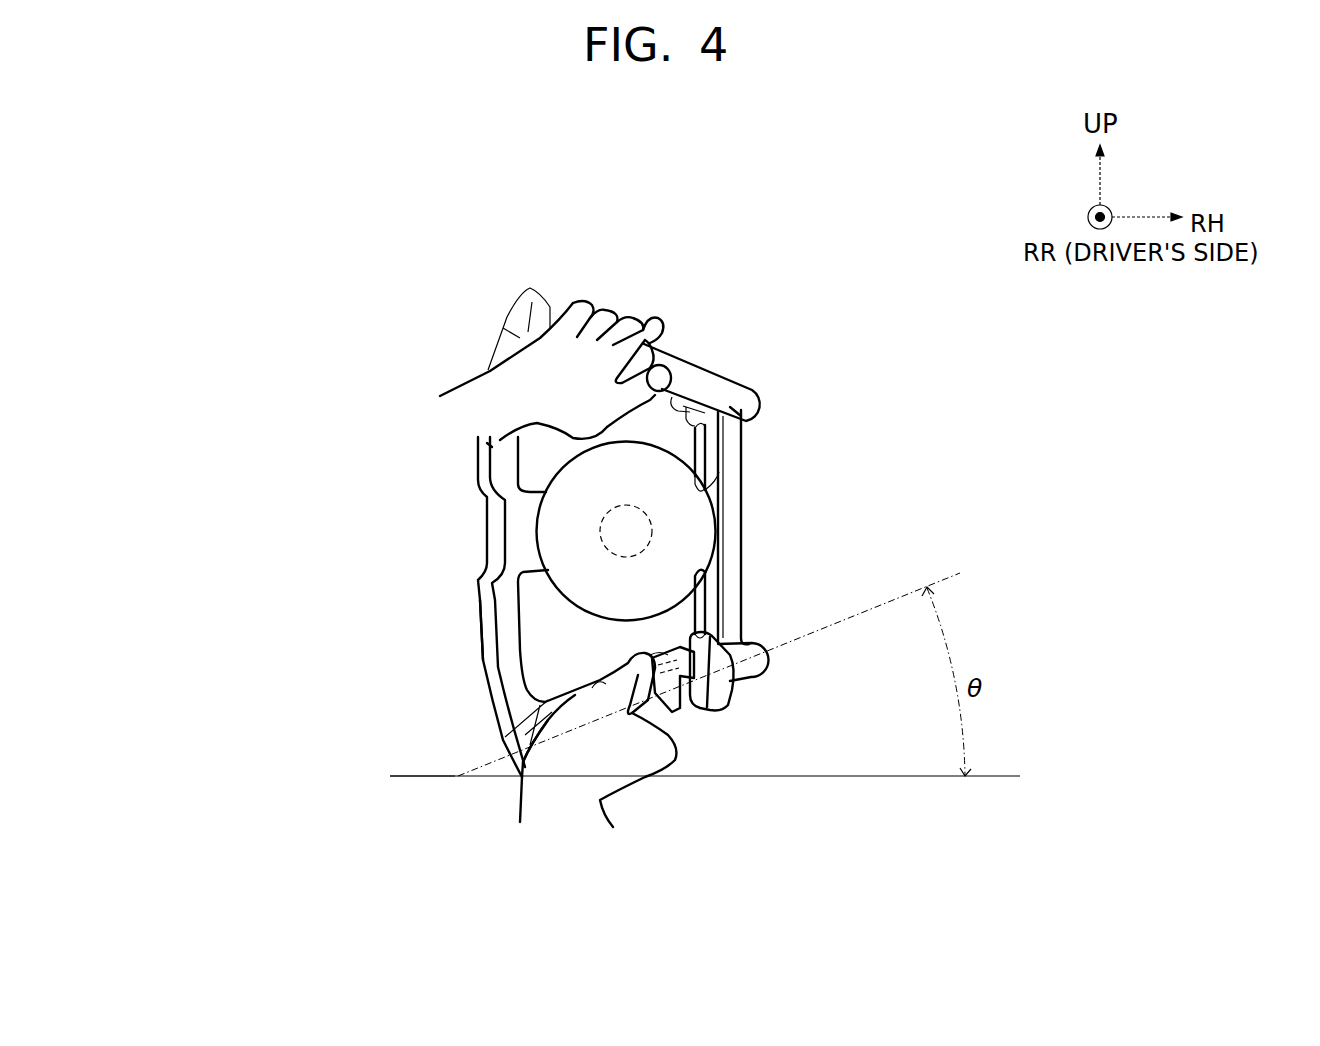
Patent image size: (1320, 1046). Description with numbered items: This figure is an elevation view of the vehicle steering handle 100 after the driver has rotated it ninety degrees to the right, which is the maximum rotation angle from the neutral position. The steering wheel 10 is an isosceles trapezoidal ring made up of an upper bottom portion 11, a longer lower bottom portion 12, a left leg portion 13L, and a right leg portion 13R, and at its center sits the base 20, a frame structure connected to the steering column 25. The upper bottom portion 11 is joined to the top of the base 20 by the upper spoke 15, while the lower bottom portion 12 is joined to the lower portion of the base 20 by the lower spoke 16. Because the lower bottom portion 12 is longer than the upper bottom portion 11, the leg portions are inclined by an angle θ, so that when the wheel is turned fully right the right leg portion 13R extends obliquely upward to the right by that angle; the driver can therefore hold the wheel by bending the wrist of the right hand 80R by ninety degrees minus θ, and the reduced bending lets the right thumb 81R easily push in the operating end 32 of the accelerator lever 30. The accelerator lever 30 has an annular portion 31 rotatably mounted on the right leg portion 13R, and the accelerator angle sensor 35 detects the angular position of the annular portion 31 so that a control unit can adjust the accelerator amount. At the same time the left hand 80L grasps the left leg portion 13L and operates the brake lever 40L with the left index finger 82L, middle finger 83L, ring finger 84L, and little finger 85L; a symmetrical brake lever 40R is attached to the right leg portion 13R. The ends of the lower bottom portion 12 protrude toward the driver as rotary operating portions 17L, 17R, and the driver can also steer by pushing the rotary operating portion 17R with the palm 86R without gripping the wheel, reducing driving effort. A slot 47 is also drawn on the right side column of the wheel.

The vehicle steering handle 100 is at (211, 219).
The steering wheel 10 is at (478, 656).
The upper bottom portion 11 is at (742, 572).
The lower bottom portion 12 is at (486, 687).
The left leg portion 13L is at (740, 386).
The right leg portion 13R is at (755, 677).
The upper spoke 15 is at (712, 490).
The lower spoke 16 is at (535, 578).
The rotary operating portion 17L is at (532, 313).
The rotary operating portion 17R is at (520, 712).
The base 20 is at (537, 523).
The steering column 25 is at (652, 532).
The accelerator lever 30 is at (692, 722).
The annular portion 31 is at (717, 700).
The operating end 32 is at (657, 658).
The accelerator angle sensor 35 is at (728, 700).
The brake lever 40L is at (698, 405).
The brake lever 40R is at (596, 683).
The slot 47 is at (707, 447).
The left hand 80L is at (477, 377).
The right hand 80R is at (603, 803).
The right thumb 81R is at (687, 714).
The left index finger 82L is at (662, 324).
The middle finger 83L is at (632, 318).
The ring finger 84L is at (600, 312).
The little finger 85L is at (583, 298).
The palm 86R is at (543, 705).